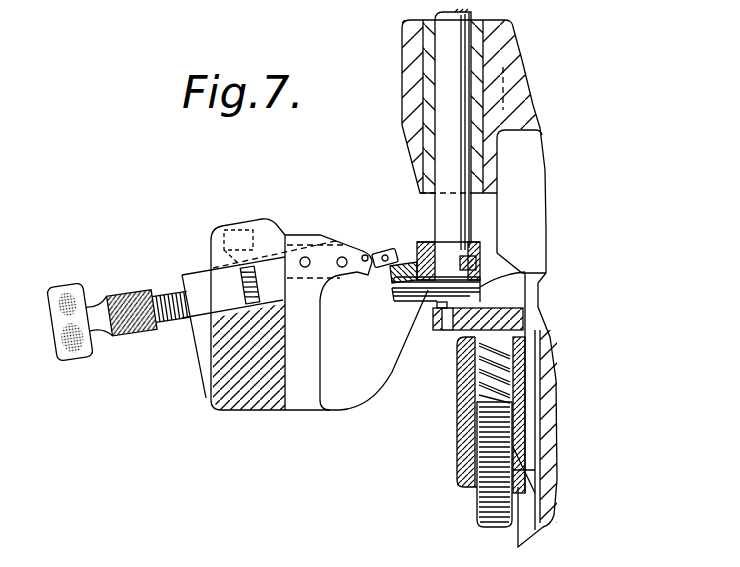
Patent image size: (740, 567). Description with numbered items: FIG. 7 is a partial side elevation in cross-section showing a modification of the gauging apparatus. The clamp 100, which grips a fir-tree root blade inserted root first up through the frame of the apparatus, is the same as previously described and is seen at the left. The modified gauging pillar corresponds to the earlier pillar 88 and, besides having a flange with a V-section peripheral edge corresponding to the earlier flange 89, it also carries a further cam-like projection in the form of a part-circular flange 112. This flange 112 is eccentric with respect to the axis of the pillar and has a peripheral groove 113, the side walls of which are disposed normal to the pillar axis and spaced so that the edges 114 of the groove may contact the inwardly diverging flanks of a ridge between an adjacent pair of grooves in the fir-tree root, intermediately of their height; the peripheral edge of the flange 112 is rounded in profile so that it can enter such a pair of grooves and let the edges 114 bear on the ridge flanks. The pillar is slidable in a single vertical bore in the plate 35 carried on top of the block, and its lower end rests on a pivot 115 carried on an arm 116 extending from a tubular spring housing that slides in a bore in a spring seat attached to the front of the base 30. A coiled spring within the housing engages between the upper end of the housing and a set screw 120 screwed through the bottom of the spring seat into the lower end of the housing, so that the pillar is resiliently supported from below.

The base 30 is at (547, 440).
The plate 35 is at (512, 58).
The pillar 88 is at (440, 210).
The flange 89 is at (407, 262).
The clamp 100 is at (243, 215).
The part-circular flange 112 is at (412, 312).
The peripheral groove 113 is at (436, 303).
The edges of the groove 114 is at (392, 284).
The pivot 115 is at (478, 405).
The arm 116 is at (477, 445).
The set screw 120 is at (477, 500).